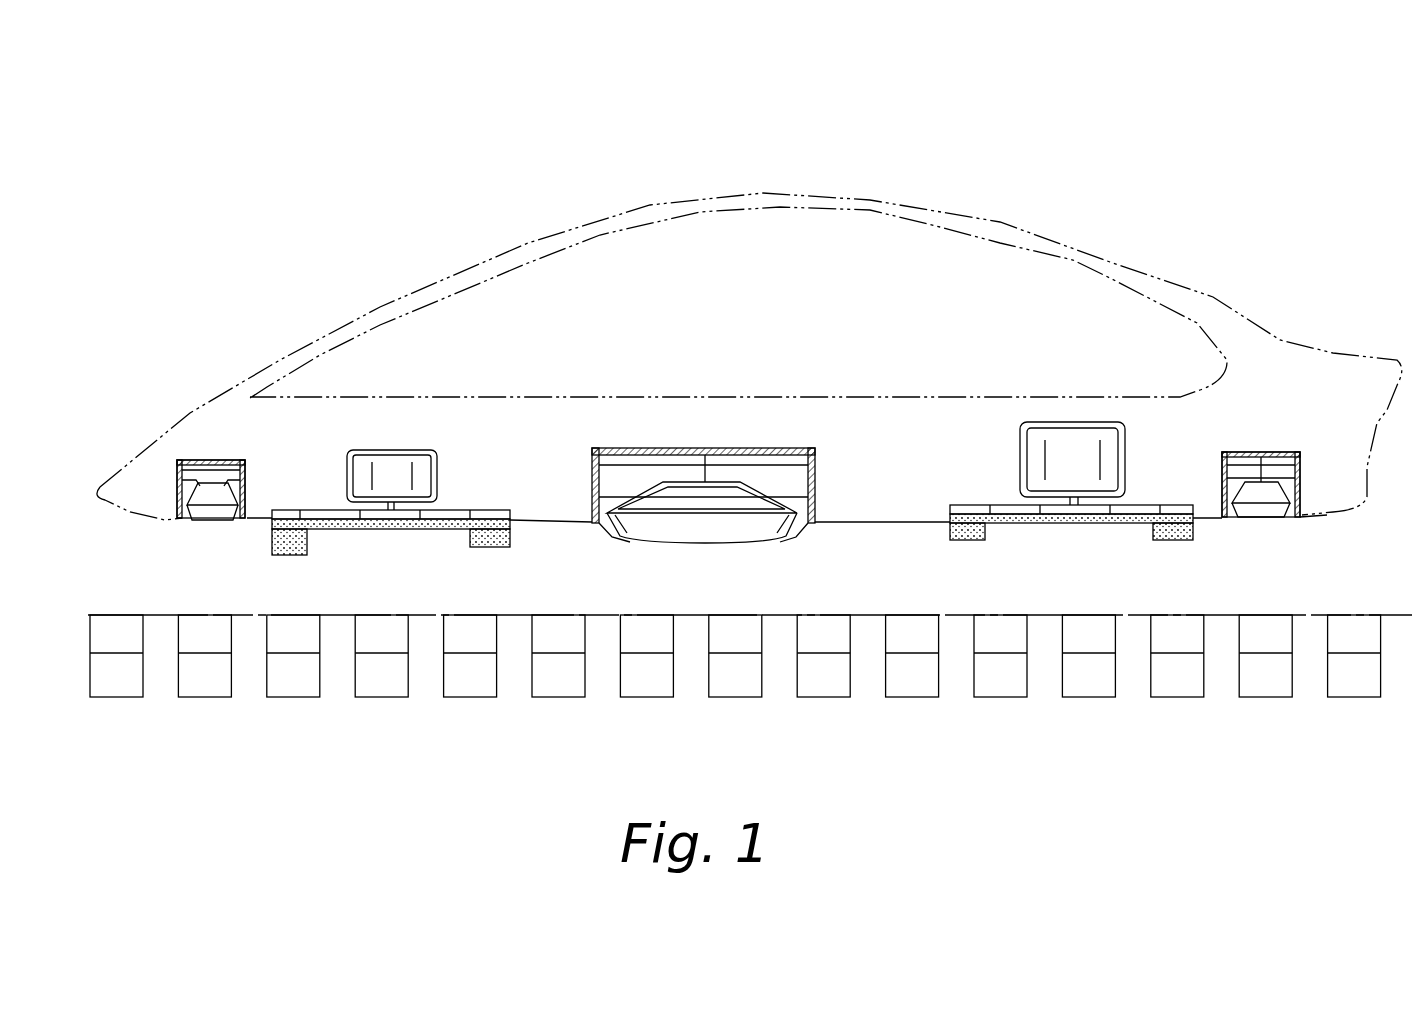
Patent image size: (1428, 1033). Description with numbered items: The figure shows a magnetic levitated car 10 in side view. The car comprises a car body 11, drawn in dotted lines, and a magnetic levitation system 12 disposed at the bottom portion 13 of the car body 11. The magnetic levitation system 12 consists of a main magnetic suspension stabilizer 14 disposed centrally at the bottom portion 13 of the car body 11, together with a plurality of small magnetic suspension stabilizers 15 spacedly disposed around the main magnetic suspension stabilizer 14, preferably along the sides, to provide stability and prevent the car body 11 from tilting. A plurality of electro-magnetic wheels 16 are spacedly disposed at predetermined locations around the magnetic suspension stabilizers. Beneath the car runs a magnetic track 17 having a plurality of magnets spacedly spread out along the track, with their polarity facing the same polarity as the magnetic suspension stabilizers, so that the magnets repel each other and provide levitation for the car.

The magnetic levitated car 10 is at (980, 120).
The car body 11 is at (1082, 243).
The magnetic levitation system 12 is at (655, 586).
The bottom portion 13 is at (884, 546).
The main magnetic suspension stabilizer 14 is at (822, 473).
The small magnetic suspension stabilizer 15 is at (248, 480).
The electro-magnetic wheel 16 is at (1143, 460).
The magnetic track 17 is at (1140, 600).